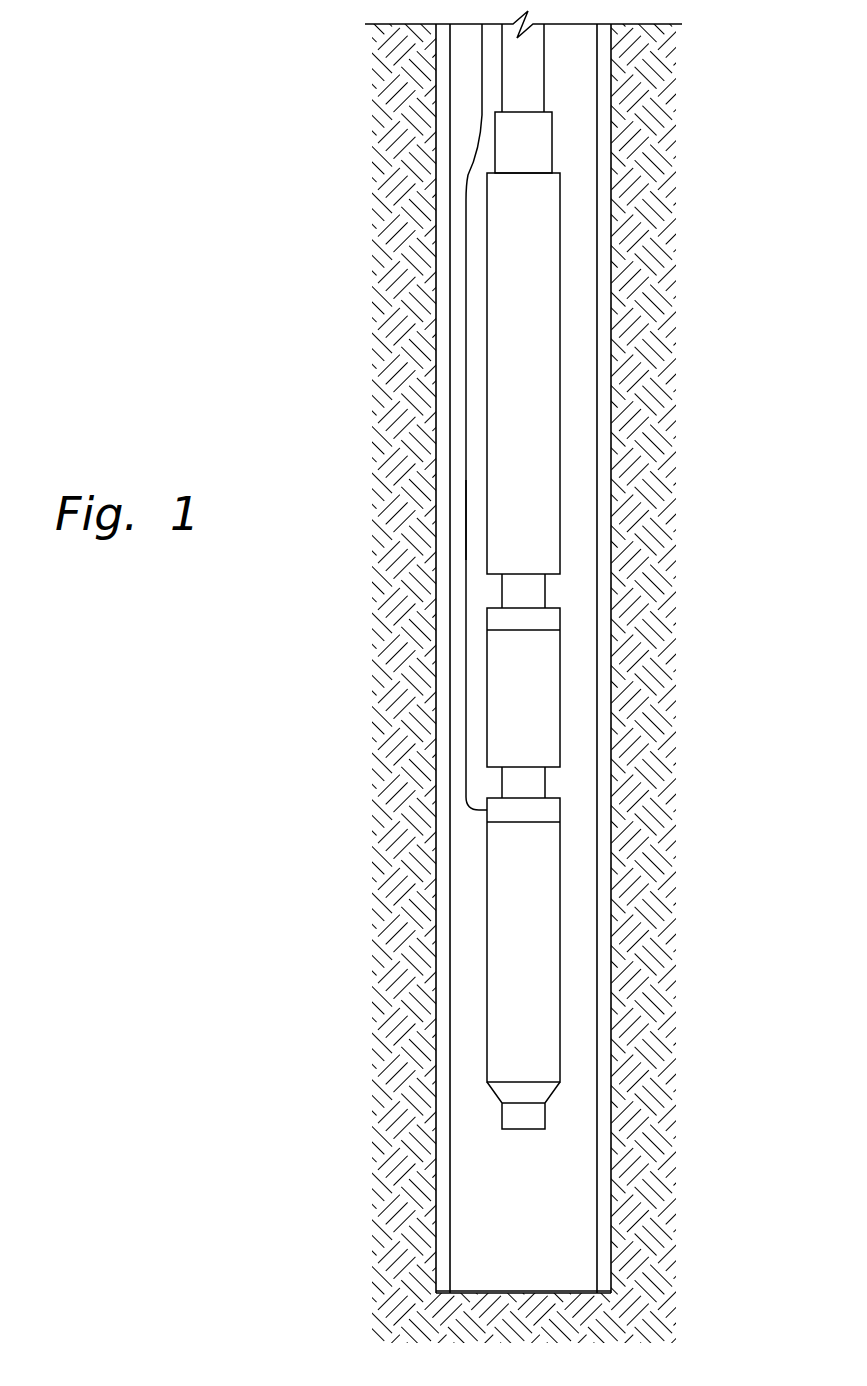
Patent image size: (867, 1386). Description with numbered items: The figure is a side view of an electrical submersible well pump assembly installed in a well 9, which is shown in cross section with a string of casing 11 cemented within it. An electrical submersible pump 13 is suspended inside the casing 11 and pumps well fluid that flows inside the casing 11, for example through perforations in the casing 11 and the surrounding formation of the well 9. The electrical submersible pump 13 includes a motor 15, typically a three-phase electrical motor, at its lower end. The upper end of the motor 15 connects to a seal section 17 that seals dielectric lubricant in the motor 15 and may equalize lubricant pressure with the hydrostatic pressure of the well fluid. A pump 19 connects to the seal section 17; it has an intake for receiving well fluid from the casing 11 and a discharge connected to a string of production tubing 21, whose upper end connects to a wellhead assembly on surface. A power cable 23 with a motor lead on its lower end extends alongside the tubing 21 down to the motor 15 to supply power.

The well 9 is at (527, 1237).
The casing 11 is at (604, 1153).
The electrical submersible pump 13 is at (477, 530).
The motor 15 is at (559, 958).
The seal section 17 is at (559, 688).
The pump 19 is at (560, 375).
The production tubing 21 is at (544, 80).
The power cable 23 is at (478, 128).